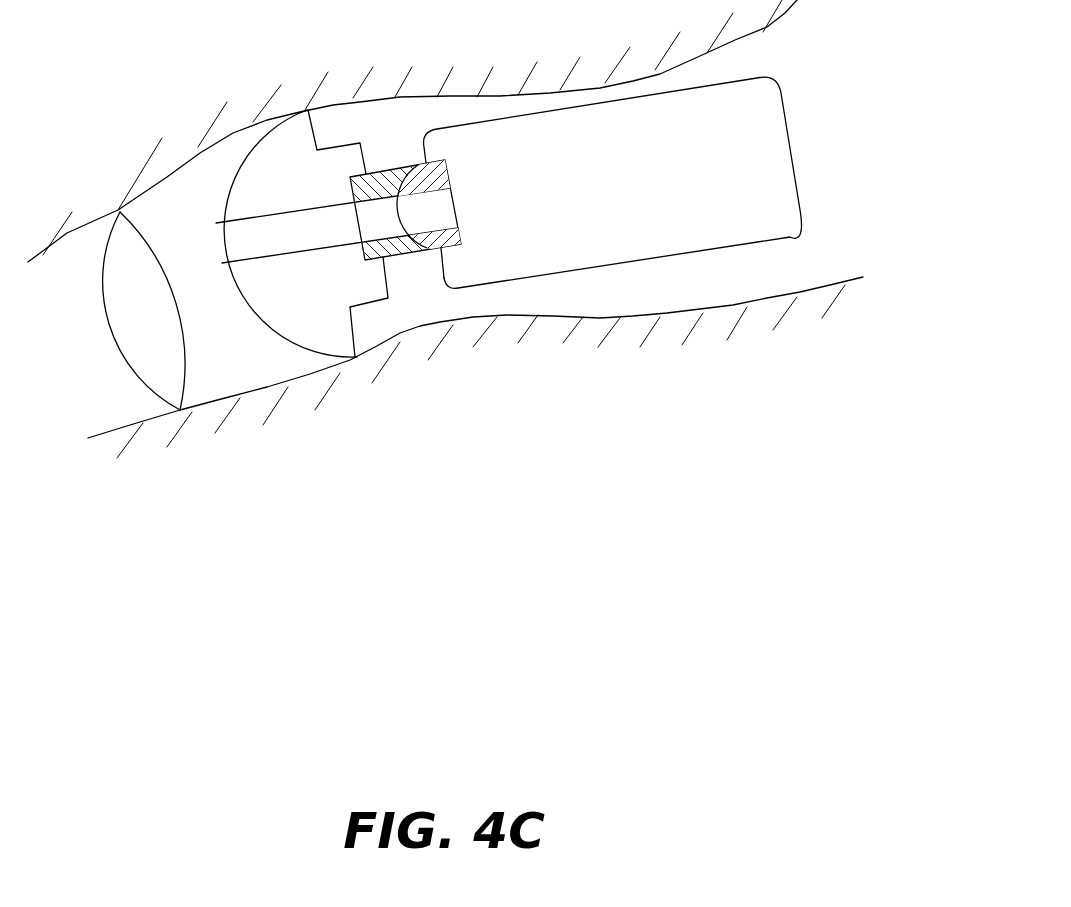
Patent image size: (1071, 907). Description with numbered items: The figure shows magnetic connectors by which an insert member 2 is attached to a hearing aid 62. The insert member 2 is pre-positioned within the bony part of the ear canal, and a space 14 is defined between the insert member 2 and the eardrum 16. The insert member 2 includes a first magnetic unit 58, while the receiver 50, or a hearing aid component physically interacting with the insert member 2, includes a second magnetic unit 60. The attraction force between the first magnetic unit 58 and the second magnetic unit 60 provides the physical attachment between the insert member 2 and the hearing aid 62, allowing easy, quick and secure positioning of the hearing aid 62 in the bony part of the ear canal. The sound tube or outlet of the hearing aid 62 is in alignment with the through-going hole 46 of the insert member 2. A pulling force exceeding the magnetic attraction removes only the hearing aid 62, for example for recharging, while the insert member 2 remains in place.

The insert member 2 is at (241, 152).
The space 14 is at (262, 369).
The eardrum 16 is at (123, 315).
The through-going hole 46 is at (235, 250).
The receiver 50 is at (433, 182).
The first magnetic unit 58 is at (383, 186).
The second magnetic unit 60 is at (425, 250).
The hearing aid 62 is at (540, 257).